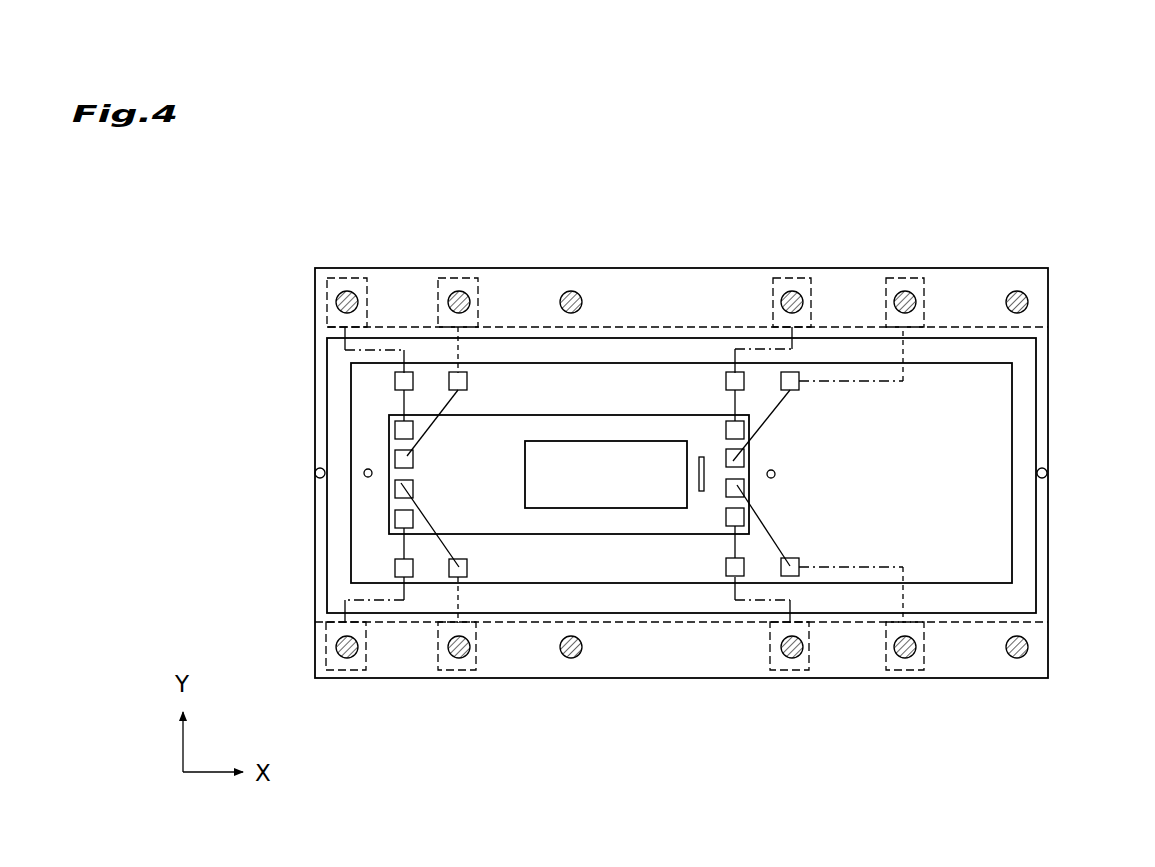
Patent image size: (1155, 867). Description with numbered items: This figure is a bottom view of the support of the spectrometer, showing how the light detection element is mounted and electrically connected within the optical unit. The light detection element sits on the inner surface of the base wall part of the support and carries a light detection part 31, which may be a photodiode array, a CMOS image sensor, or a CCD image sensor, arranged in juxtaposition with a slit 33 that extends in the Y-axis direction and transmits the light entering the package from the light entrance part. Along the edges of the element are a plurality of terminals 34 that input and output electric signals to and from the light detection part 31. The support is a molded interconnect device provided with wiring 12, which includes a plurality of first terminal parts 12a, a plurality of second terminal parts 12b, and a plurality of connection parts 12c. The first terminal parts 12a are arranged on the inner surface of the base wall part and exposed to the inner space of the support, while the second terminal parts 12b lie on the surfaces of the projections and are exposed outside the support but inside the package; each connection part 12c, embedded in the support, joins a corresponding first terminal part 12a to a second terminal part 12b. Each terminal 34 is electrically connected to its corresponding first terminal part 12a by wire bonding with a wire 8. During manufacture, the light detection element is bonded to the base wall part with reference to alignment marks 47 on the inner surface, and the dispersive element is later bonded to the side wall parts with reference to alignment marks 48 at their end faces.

The wire 8 is at (735, 345).
The wiring 12 is at (333, 352).
The first terminal part 12a is at (396, 381).
The second terminal part 12b is at (340, 276).
The connection part 12c is at (390, 348).
The light detection part 31 is at (603, 496).
The slit 33 is at (699, 472).
The terminal 34 is at (414, 460).
The alignment mark 47 is at (368, 469).
The alignment mark 48 is at (315, 473).